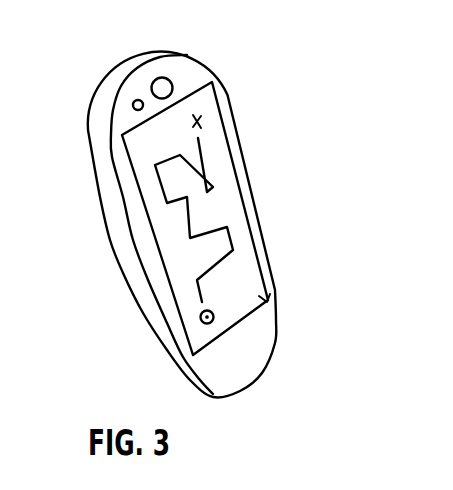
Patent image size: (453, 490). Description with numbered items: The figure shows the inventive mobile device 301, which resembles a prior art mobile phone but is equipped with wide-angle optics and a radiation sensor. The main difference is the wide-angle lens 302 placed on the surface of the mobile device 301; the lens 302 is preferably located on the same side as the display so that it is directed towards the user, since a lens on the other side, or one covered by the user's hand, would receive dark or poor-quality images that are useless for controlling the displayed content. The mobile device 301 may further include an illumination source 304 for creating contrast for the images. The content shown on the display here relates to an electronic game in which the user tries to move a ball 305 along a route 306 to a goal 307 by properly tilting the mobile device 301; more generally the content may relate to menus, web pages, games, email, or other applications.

The mobile device 301 is at (158, 53).
The wide-angle lens 302 is at (172, 84).
The illumination source 304 is at (132, 101).
The ball 305 is at (198, 317).
The route 306 is at (237, 240).
The goal 307 is at (205, 124).